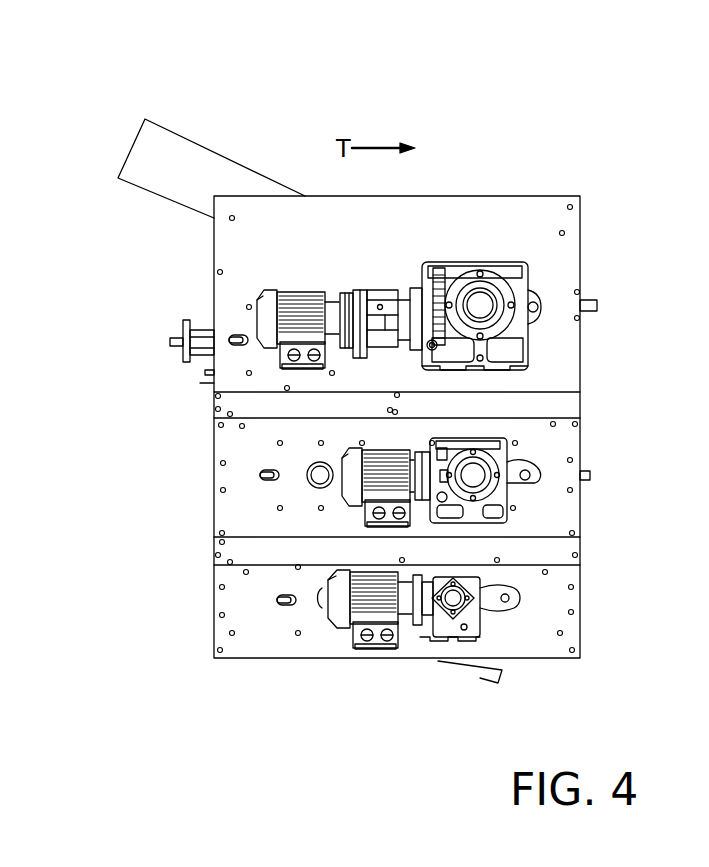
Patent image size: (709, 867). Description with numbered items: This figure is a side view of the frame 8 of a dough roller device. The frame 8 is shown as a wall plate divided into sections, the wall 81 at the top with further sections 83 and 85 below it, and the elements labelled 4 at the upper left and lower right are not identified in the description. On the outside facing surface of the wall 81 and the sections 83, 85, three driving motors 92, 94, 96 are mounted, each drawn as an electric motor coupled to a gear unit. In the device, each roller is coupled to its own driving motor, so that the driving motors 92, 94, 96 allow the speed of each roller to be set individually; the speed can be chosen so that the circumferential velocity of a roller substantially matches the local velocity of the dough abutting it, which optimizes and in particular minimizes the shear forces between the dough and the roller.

The conveyor/guide bracket 4 is at (173, 152).
The frame 8 is at (240, 711).
The wall 81 is at (488, 206).
The second mounting plate section 83 is at (559, 443).
The third mounting plate section 85 is at (555, 585).
The driving motor 92 is at (497, 283).
The driving motor 94 is at (500, 498).
The driving motor 96 is at (478, 615).